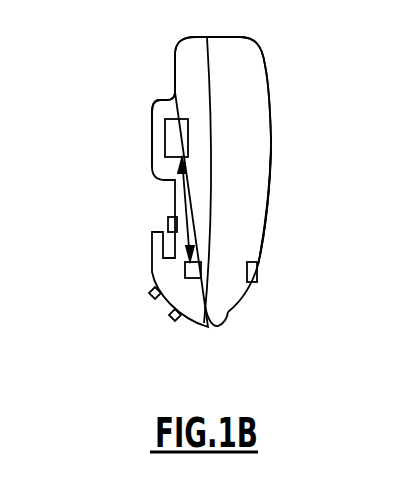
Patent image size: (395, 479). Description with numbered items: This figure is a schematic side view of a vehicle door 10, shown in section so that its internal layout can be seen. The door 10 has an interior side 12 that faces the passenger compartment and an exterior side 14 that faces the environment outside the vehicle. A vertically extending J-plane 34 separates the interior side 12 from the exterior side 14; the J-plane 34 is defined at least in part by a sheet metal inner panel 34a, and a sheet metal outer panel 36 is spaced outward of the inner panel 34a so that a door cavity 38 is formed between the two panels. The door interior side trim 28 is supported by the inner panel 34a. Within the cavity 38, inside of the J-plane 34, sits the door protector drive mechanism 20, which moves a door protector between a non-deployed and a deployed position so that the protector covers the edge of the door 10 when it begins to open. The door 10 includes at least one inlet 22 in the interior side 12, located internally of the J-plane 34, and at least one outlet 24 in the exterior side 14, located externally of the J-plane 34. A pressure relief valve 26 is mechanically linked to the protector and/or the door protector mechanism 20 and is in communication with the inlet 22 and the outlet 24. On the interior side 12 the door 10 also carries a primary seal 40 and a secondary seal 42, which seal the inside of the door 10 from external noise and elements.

The door 10 is at (293, 231).
The interior side 12 is at (175, 70).
The exterior side 14 is at (258, 73).
The door protector drive mechanism 20 is at (165, 142).
The inlet 22 is at (168, 222).
The outlet 24 is at (255, 275).
The pressure relief valve 26 is at (185, 272).
The door interior side trim 28 is at (150, 115).
The J-plane 34 is at (211, 189).
The sheet metal inner panel 34a is at (224, 326).
The sheet metal outer panel 36 is at (271, 176).
The door cavity 38 is at (238, 213).
The primary seal 40 is at (171, 319).
The secondary seal 42 is at (150, 297).